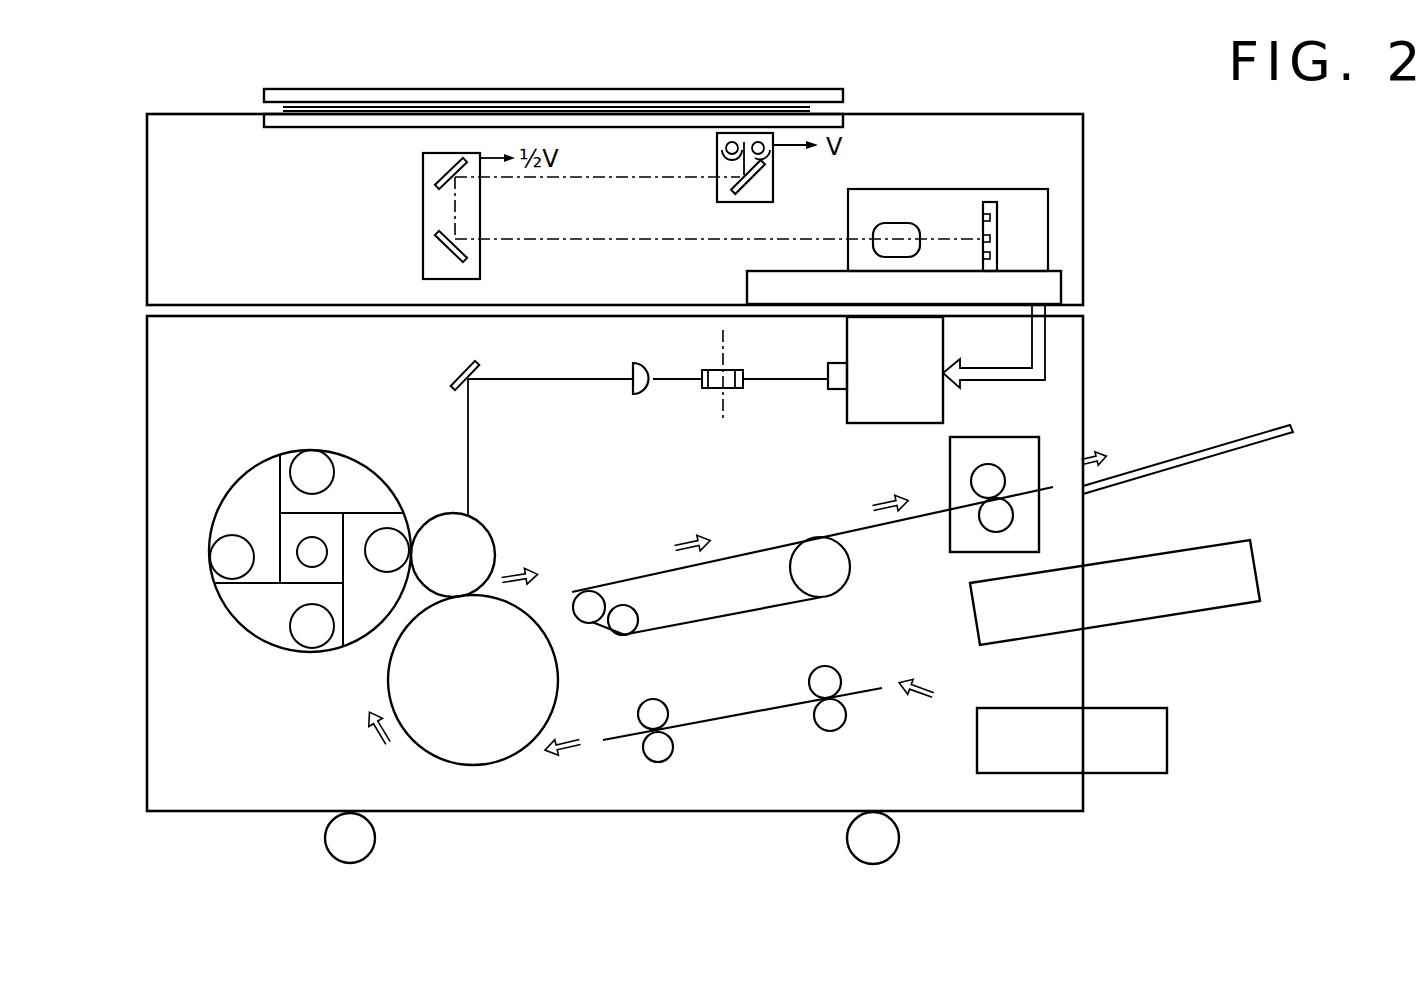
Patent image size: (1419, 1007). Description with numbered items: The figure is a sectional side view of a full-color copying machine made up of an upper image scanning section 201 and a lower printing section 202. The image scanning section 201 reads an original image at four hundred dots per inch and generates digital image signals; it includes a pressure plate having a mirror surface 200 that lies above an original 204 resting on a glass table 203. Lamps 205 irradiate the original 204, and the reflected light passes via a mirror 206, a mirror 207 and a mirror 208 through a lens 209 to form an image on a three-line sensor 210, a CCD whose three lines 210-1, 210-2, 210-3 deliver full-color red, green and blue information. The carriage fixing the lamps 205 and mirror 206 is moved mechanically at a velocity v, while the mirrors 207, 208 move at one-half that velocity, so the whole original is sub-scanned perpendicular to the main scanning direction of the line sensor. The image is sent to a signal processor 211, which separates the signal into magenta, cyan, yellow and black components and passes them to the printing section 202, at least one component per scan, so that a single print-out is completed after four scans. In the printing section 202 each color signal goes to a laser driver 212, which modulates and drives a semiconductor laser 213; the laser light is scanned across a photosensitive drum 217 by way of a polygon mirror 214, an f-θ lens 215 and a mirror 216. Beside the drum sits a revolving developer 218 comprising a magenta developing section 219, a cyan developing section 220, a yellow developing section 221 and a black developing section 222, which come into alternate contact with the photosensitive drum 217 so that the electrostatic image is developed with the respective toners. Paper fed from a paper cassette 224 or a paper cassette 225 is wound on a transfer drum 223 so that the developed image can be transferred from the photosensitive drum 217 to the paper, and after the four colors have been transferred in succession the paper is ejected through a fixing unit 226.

The pressure plate having a mirror surface 200 is at (398, 89).
The image scanning section 201 is at (1083, 122).
The printing section 202 is at (1084, 416).
The glass table (platen) 203 is at (843, 117).
The original 204 is at (808, 108).
The lamps 205 is at (757, 142).
The mirror 206 is at (755, 185).
The mirror 207 is at (437, 172).
The mirror 208 is at (437, 243).
The lens 209 is at (897, 223).
The three-line sensor (CCD) 210 is at (990, 203).
The line of the three-line sensor 210-1 is at (997, 218).
The line of the three-line sensor 210-2 is at (997, 238).
The line of the three-line sensor 210-3 is at (997, 256).
The signal processor 211 is at (1062, 292).
The laser driver 212 is at (945, 408).
The semiconductor laser 213 is at (828, 387).
The polygon mirror 214 is at (735, 370).
The f-θ lens 215 is at (630, 365).
The mirror 216 is at (468, 372).
The photosensitive drum 217 is at (482, 522).
The revolving developer 218 is at (372, 460).
The magenta developing section 219 is at (392, 528).
The cyan developing section 220 is at (312, 650).
The yellow developing section 221 is at (209, 553).
The black developing section 222 is at (313, 450).
The transfer drum 223 is at (416, 748).
The paper cassette 224 is at (1167, 745).
The paper cassette 225 is at (1262, 580).
The fixing unit 226 is at (1040, 530).